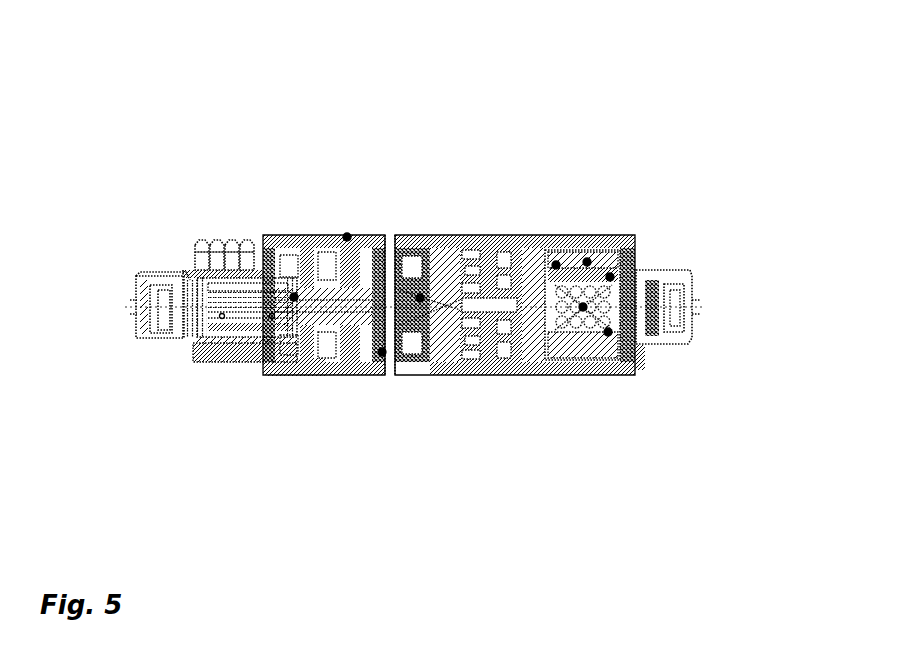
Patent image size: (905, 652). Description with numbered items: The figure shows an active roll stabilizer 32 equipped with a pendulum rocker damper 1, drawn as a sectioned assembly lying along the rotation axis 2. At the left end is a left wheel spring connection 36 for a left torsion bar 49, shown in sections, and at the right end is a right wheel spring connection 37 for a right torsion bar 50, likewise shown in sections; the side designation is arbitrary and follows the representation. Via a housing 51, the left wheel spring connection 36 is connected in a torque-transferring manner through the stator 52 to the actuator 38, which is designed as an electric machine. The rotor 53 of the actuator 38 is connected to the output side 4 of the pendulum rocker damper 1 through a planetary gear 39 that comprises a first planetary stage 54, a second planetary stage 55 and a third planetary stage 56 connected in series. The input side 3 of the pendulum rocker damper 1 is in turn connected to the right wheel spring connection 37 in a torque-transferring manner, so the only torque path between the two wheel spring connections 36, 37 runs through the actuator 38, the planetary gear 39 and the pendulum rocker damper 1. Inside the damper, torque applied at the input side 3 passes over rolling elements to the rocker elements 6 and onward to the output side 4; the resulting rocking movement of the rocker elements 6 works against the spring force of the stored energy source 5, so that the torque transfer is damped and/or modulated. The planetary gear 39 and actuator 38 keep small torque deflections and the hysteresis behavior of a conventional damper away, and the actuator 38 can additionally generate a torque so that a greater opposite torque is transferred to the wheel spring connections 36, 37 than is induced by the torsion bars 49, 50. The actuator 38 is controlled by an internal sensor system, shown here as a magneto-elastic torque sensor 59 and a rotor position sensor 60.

The active roll stabilizer 32 is at (728, 66).
The left torsion bar 49 is at (187, 277).
The rotation axis 2 is at (132, 325).
The left wheel spring connection 36 is at (172, 338).
The magneto-elastic torque sensor 59 is at (203, 249).
The rotor position sensor 60 is at (296, 270).
The housing 51 is at (347, 236).
The stator 52 is at (382, 356).
The actuator 38 is at (392, 245).
The rotor 53 is at (421, 294).
The planetary gear 39 is at (410, 470).
The first planetary stage 54 is at (443, 371).
The second planetary stage 55 is at (467, 368).
The third planetary stage 56 is at (507, 371).
The pendulum rocker damper 1 is at (578, 368).
The output side 4 is at (556, 262).
The input side 3 is at (587, 259).
The stored energy source 5 is at (585, 312).
The rocker elements 6 is at (610, 332).
The right wheel spring connection 37 is at (657, 340).
The right torsion bar 50 is at (686, 338).